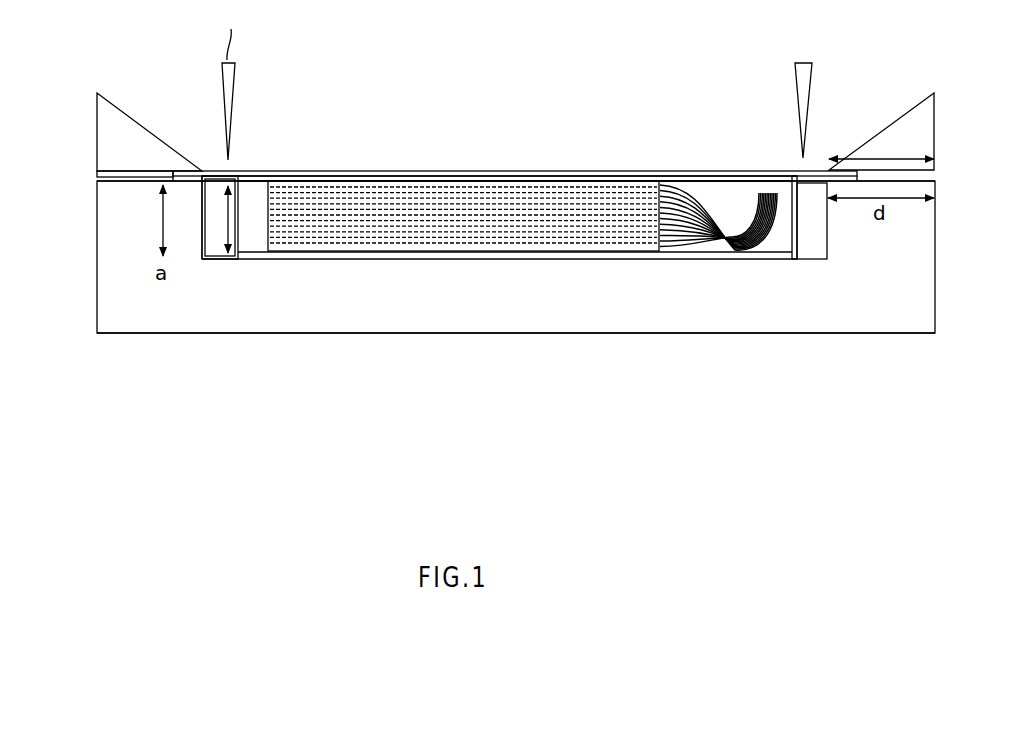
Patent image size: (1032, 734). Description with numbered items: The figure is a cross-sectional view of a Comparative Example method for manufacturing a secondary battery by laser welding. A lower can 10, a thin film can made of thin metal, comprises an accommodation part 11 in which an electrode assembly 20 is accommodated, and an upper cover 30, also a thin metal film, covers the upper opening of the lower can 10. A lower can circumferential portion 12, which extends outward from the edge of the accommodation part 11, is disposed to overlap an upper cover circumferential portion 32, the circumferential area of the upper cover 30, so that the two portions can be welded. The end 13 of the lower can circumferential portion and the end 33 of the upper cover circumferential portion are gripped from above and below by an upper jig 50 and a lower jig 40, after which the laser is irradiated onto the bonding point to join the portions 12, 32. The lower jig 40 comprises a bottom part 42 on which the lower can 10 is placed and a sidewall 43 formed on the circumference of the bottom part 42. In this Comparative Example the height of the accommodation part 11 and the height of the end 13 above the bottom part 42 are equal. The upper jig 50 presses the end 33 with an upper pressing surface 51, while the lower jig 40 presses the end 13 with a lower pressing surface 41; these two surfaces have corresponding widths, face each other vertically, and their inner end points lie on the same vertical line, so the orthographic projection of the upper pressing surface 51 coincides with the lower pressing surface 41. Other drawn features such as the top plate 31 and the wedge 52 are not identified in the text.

The lower can 10 is at (690, 266).
The accommodation part 11 is at (800, 235).
The lower can circumferential portion 12 is at (210, 183).
The end of the lower can circumferential portion 13 is at (205, 183).
The electrode assembly 20 is at (447, 235).
The upper cover 30 is at (358, 138).
The top plate 31 is at (477, 170).
The upper cover circumferential portion 32 is at (217, 170).
The end of the upper cover circumferential portion 33 is at (202, 170).
The lower jig 40 is at (82, 283).
The lower pressing surface 41 is at (97, 182).
The bottom part 42 is at (563, 260).
The sidewall 43 is at (830, 230).
The upper jig 50 is at (82, 126).
The upper pressing surface 51 is at (97, 173).
The jig wedge 52 is at (130, 118).